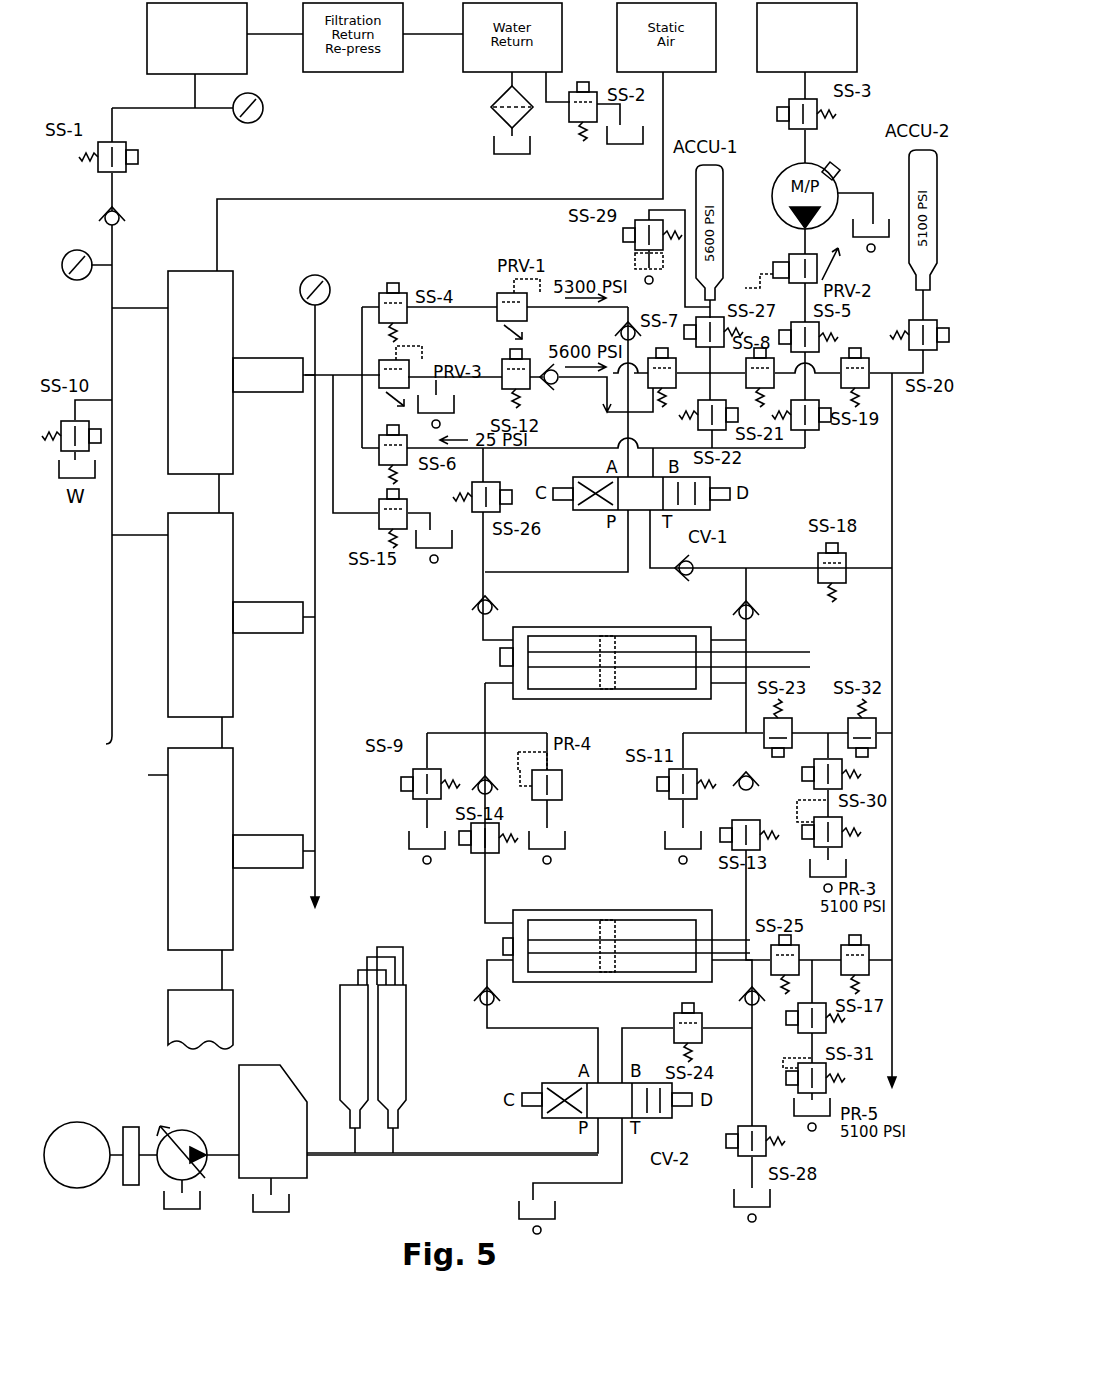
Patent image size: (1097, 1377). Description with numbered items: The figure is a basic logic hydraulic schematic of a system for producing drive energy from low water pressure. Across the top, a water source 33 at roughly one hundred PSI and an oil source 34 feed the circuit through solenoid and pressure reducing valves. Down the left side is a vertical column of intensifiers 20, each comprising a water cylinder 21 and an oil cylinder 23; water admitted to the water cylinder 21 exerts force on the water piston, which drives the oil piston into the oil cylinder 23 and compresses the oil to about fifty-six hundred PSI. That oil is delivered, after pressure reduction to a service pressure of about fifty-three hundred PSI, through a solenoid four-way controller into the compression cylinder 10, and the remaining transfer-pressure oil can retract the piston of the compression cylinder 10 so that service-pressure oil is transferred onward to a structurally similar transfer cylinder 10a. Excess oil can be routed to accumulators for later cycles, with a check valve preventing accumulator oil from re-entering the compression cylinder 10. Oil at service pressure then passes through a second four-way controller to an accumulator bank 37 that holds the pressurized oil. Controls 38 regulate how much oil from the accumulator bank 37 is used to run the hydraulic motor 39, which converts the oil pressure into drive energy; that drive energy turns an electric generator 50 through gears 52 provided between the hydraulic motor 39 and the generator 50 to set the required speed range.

The water source 33 is at (146, 6).
The oil source 34 is at (856, 6).
The intensifier 20 is at (178, 990).
The water cylinder 21 is at (212, 862).
The oil cylinder 23 is at (300, 868).
The compression cylinder 10 is at (590, 628).
The transfer cylinder 10a is at (596, 906).
The accumulator bank 37 is at (400, 1050).
The controls 38 is at (307, 1178).
The hydraulic motor 39 is at (160, 1170).
The electric generator 50 is at (75, 1189).
The gears 52 is at (130, 1127).